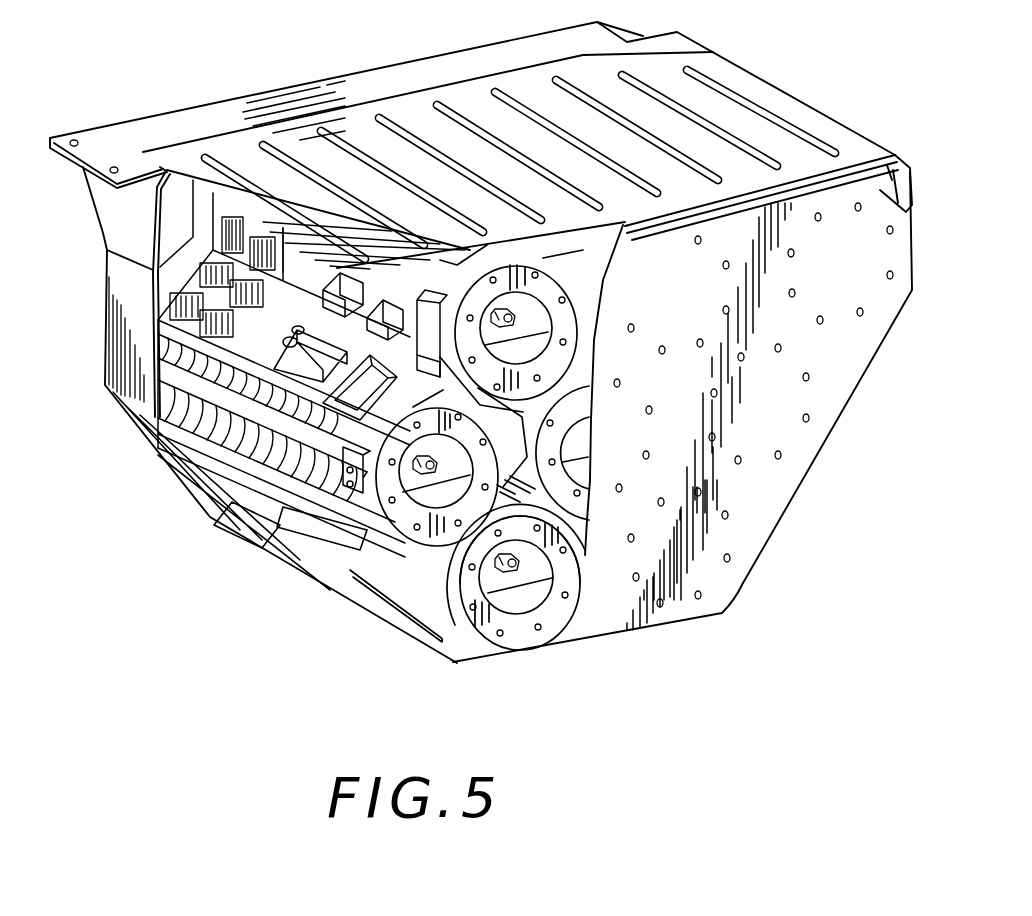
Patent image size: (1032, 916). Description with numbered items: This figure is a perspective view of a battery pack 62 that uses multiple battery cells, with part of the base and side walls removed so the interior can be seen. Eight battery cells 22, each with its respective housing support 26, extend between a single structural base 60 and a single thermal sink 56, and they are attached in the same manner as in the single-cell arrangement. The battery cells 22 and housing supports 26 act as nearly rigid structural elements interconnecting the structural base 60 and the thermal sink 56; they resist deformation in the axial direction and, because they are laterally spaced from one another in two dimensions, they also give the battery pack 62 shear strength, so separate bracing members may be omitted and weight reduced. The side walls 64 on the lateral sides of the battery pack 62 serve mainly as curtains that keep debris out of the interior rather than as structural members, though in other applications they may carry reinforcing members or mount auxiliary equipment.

The battery cell 22 is at (508, 600).
The housing support 26 is at (414, 582).
The thermal sink 56 is at (729, 587).
The structural base 60 is at (104, 328).
The battery pack 62 is at (772, 74).
The side wall 64 is at (469, 112).